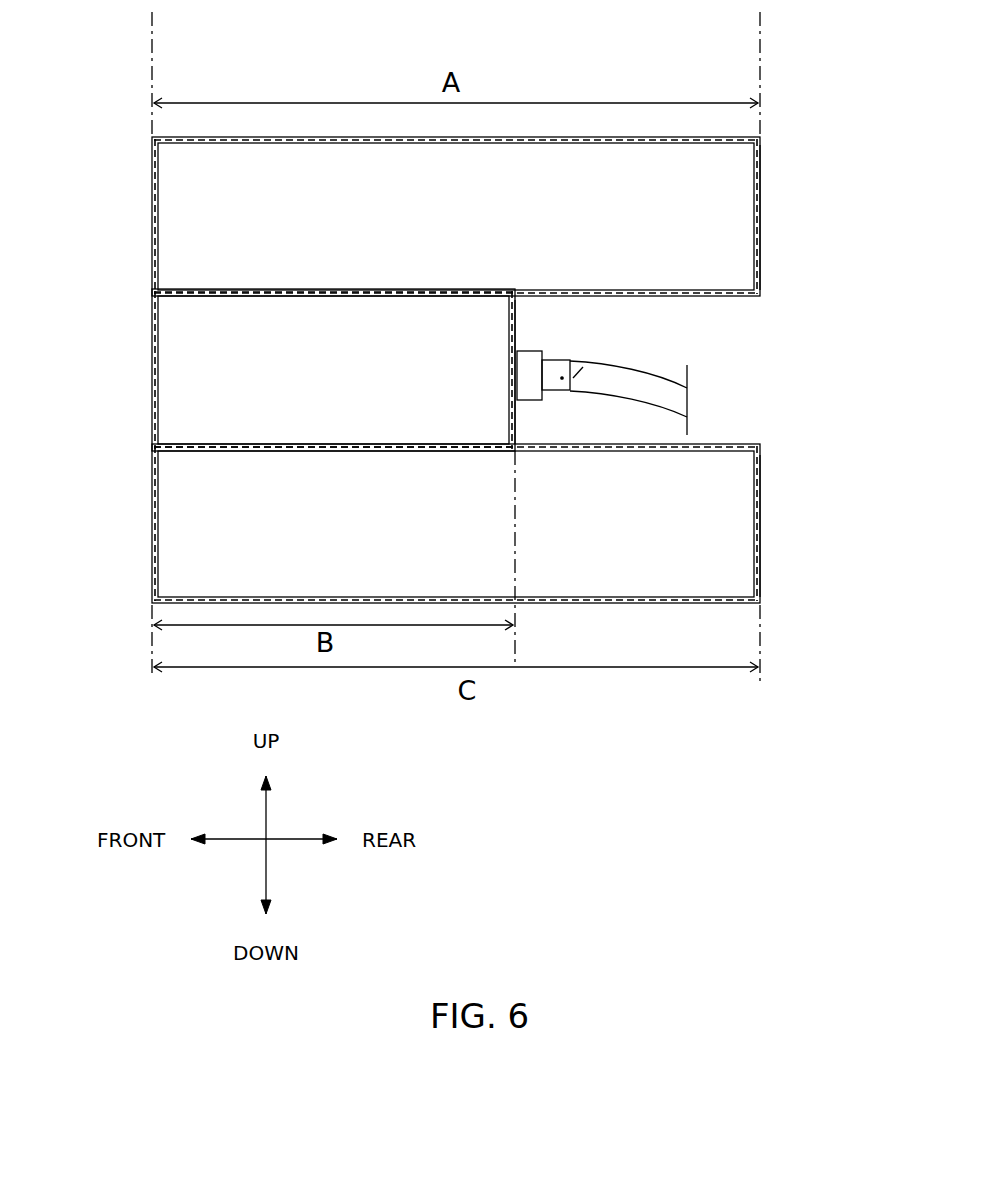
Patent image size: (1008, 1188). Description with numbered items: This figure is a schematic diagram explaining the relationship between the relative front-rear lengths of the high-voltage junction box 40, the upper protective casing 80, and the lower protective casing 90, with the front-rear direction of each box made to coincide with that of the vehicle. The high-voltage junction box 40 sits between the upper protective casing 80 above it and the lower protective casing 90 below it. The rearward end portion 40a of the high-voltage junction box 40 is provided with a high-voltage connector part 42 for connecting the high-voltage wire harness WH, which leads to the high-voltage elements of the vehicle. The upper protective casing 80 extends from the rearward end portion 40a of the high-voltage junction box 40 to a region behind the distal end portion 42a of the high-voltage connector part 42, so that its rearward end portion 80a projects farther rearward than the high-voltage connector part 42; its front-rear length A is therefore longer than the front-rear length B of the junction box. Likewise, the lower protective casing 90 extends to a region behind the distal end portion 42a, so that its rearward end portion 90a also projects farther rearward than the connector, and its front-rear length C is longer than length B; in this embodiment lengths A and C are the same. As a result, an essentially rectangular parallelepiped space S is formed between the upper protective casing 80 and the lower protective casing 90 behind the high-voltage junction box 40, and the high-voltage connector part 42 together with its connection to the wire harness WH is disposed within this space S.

The upper protective casing 80 is at (165, 157).
The rearward end portion of the upper protective casing 80a is at (759, 212).
The high-voltage junction box 40 is at (165, 307).
The rearward end portion of the high-voltage junction box 40a is at (518, 417).
The high-voltage connector part 42 is at (527, 349).
The distal end portion of the high-voltage connector part 42a is at (590, 360).
The lower protective casing 90 is at (165, 466).
The rearward end portion of the lower protective casing 90a is at (760, 518).
The high-voltage wire harness WH is at (681, 378).
The space S is at (750, 393).